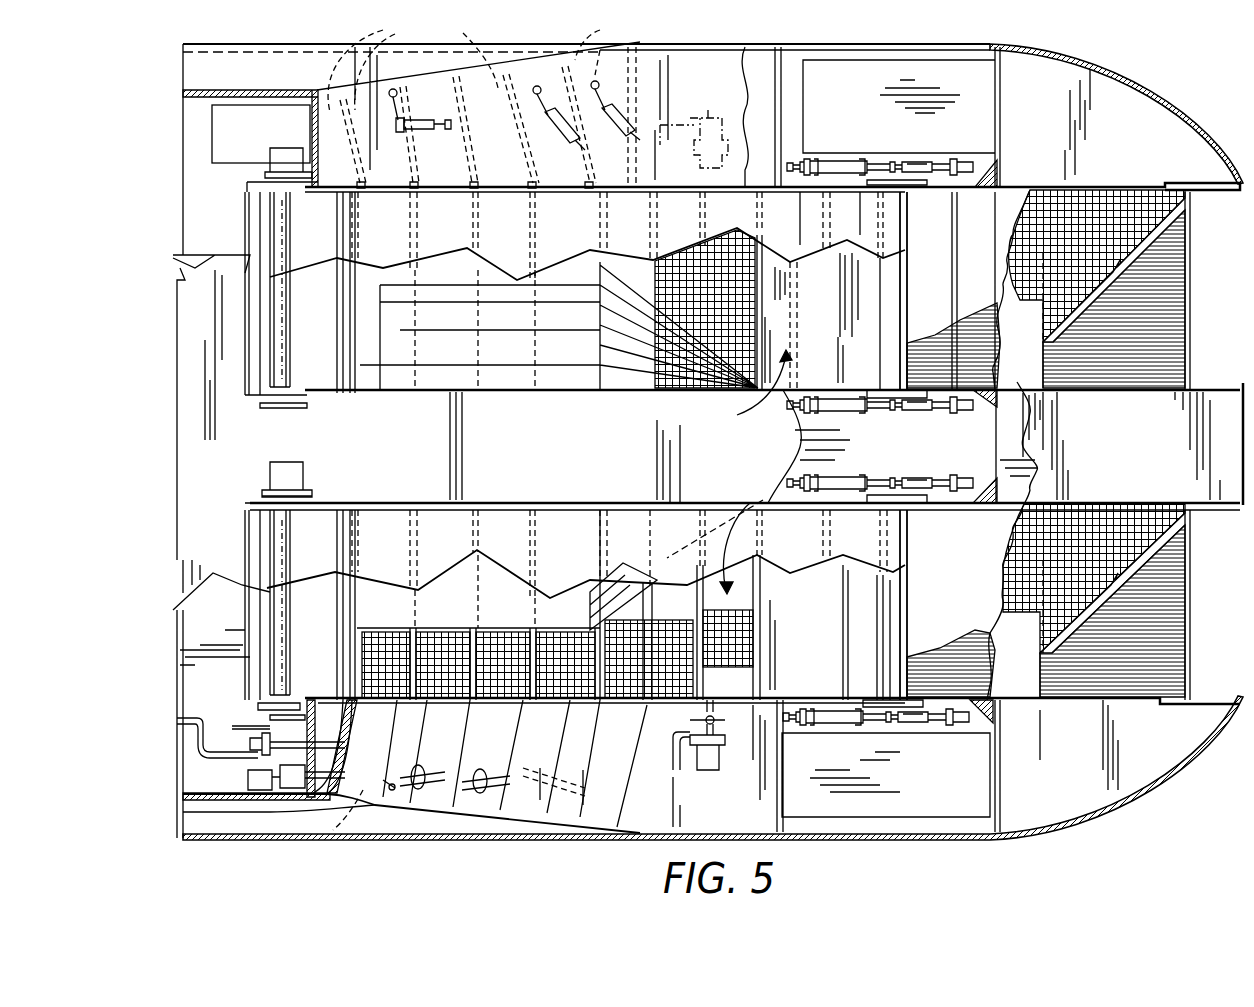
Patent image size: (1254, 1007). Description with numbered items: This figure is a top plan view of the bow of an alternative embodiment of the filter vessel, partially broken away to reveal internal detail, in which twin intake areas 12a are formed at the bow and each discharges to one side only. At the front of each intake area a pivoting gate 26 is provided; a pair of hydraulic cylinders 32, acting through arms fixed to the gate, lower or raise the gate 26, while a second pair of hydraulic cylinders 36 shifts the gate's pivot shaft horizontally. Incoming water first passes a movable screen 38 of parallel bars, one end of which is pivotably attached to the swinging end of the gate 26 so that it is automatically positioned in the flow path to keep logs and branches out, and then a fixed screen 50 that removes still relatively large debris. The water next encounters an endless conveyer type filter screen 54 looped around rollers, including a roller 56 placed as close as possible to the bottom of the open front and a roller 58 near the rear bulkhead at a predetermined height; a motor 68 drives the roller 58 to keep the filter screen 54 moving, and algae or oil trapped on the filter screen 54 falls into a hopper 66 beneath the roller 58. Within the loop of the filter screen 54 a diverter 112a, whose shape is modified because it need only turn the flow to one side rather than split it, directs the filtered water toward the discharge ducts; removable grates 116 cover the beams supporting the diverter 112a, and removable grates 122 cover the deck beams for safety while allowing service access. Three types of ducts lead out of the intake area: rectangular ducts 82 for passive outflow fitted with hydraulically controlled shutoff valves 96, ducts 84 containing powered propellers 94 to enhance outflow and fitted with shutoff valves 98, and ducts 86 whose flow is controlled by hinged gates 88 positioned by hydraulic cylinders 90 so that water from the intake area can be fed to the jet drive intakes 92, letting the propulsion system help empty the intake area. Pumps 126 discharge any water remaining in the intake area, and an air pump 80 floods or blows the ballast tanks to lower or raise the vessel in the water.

The intake areas 12a is at (727, 507).
The pivoting gate 26 is at (1007, 200).
The hydraulic cylinders 32 is at (843, 162).
The second pair of hydraulic cylinders 36 is at (958, 162).
The movable screen 38 is at (1177, 333).
The fixed screen 50 is at (993, 325).
The filter screen 54 is at (462, 207).
The roller 56 is at (907, 280).
The roller 58 is at (280, 310).
The hopper 66 is at (245, 388).
The motor 68 is at (280, 165).
The air pump 80 is at (243, 110).
The ducts 82 is at (555, 862).
The ducts 84 is at (417, 856).
The ducts 86 is at (390, 788).
The gates 88 is at (392, 90).
The hydraulic cylinders 90 is at (418, 130).
The jet drive intakes 92 is at (275, 813).
The powered propellers 94 is at (405, 805).
The shutoff valves 96 is at (540, 773).
The shutoff valves 98 is at (426, 712).
The diverters 112a is at (617, 360).
The removable grates 116 is at (747, 304).
The removable grates 122 is at (1105, 200).
The pumps 126 is at (715, 130).